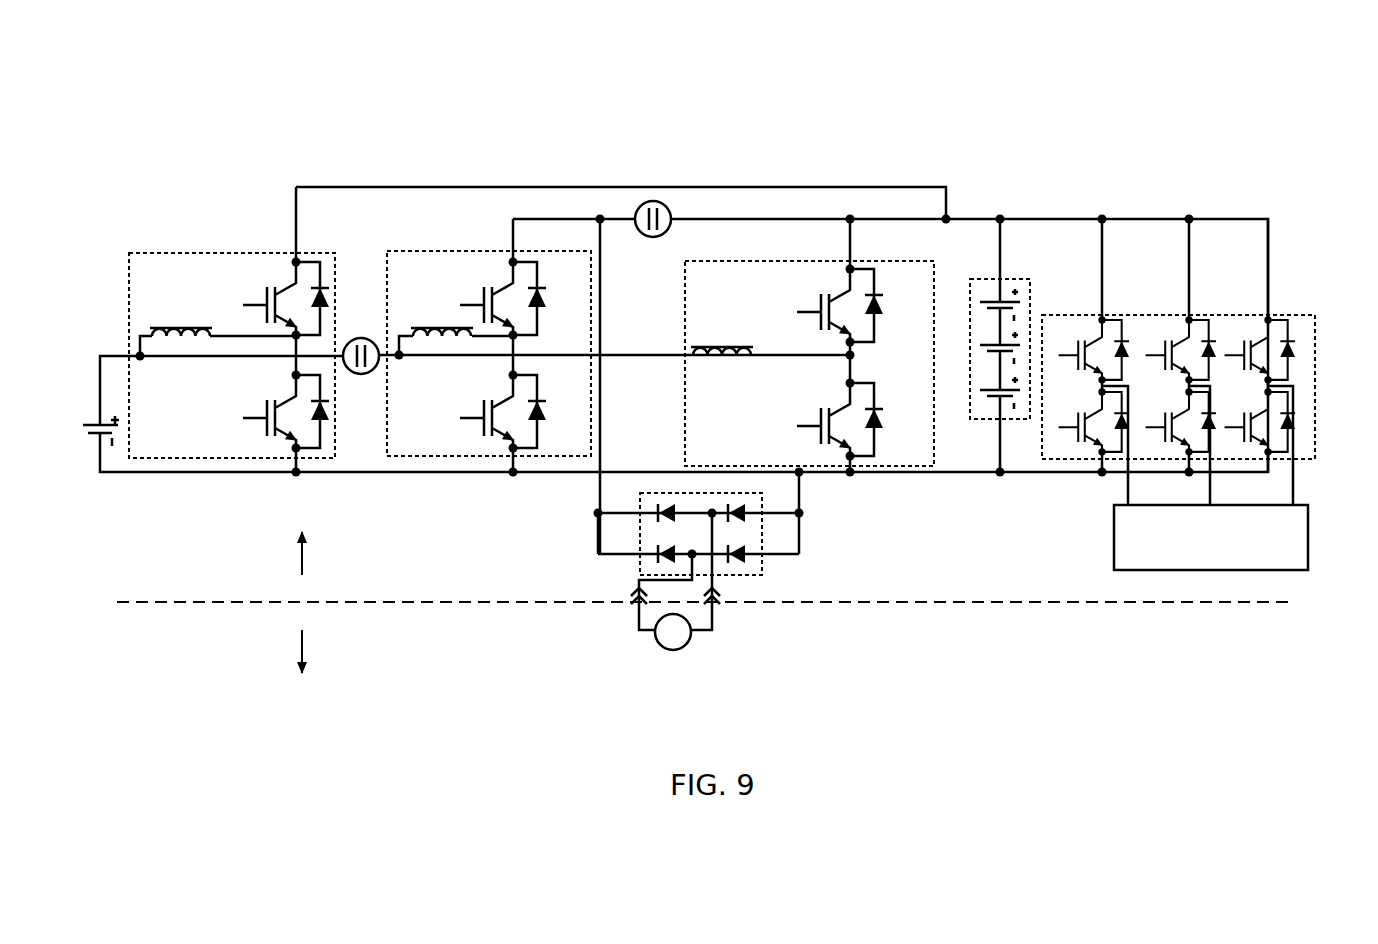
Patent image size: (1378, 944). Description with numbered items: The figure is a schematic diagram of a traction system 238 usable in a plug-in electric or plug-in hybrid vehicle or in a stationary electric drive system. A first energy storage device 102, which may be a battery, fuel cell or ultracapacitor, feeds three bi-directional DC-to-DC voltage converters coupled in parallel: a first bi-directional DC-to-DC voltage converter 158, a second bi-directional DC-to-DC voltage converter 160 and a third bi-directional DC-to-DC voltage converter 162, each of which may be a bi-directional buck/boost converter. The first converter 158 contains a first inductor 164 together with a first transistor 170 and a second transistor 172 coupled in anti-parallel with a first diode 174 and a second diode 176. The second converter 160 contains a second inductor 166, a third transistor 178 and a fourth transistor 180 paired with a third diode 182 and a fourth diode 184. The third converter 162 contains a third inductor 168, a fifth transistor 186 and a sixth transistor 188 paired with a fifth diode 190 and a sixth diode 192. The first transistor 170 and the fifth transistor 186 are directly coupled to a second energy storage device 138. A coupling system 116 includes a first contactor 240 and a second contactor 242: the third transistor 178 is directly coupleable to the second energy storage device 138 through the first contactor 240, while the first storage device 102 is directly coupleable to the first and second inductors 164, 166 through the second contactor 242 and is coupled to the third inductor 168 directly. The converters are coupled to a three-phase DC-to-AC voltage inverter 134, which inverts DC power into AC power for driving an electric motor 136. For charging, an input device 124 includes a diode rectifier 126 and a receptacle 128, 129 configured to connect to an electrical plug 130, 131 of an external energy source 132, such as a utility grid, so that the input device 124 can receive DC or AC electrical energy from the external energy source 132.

The traction system 238 is at (809, 140).
The first energy storage device 102 is at (86, 424).
The third bi-directional DC-to-DC voltage converter 162 is at (183, 252).
The third inductor 168 is at (167, 327).
The fifth transistor 186 is at (260, 306).
The sixth transistor 188 is at (260, 415).
The fifth diode 190 is at (330, 298).
The sixth diode 192 is at (326, 422).
The second bi-directional DC-to-DC voltage converter 160 is at (462, 251).
The second inductor 166 is at (427, 327).
The third transistor 178 is at (470, 306).
The fourth transistor 180 is at (480, 415).
The third diode 182 is at (547, 303).
The fourth diode 184 is at (543, 422).
The first bi-directional DC-to-DC voltage converter 158 is at (757, 260).
The first inductor 164 is at (702, 350).
The first transistor 170 is at (812, 312).
The second transistor 172 is at (813, 422).
The first diode 174 is at (885, 308).
The second diode 176 is at (885, 423).
The coupling system 116 is at (537, 309).
The first contactor 240 is at (672, 235).
The second contactor 242 is at (365, 375).
The second energy storage device 138 is at (970, 420).
The three-phase DC-to-AC voltage inverter 134 is at (1067, 313).
The electric motor 136 is at (1308, 553).
The diode rectifier 126 is at (762, 567).
The input device 124 is at (733, 606).
The receptacle 128 is at (637, 593).
The receptacle 129 is at (718, 598).
The electrical plug 130 is at (635, 607).
The electrical plug 131 is at (718, 610).
The external energy source 132 is at (672, 650).